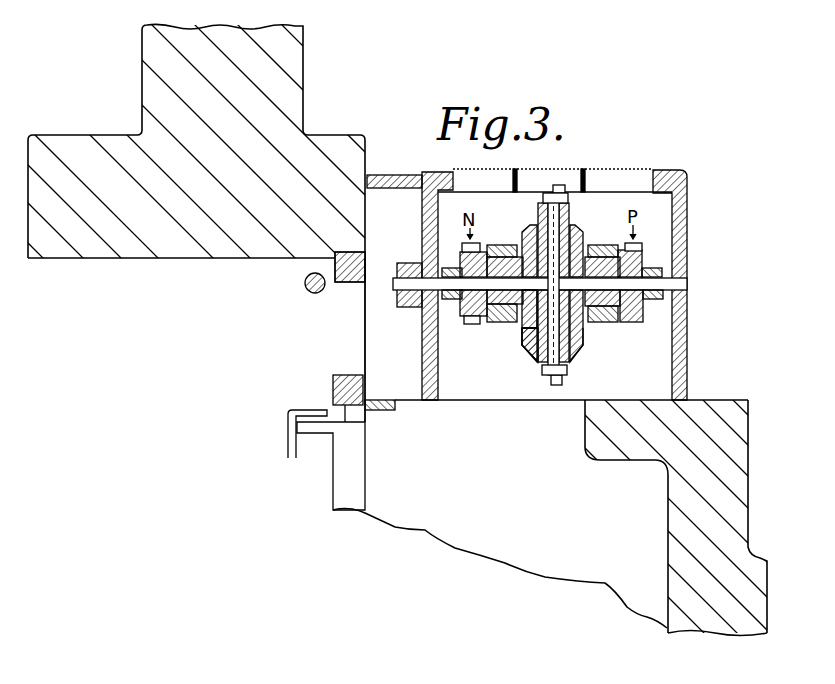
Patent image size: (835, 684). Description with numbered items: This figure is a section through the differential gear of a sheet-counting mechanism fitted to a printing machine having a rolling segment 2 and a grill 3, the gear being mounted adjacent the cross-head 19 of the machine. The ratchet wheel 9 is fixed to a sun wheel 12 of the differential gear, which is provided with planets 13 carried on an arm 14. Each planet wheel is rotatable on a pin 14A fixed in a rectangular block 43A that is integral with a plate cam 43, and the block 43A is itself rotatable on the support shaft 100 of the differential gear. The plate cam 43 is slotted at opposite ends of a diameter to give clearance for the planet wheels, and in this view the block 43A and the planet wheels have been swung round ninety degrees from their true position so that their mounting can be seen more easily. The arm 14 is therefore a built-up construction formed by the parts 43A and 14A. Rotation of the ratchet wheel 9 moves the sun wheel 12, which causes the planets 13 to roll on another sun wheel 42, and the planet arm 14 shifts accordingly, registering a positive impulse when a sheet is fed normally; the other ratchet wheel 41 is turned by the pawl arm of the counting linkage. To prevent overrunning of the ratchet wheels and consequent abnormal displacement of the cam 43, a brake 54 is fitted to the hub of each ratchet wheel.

The cross-head 19 is at (348, 152).
The rolling segment 2 is at (666, 272).
The grill 3 is at (287, 447).
The support shaft 100 is at (688, 284).
The sun wheel 12 is at (566, 250).
The planets 13 is at (566, 200).
The plate cam 43 is at (559, 185).
The rectangular block 43A is at (583, 338).
The brake 54 is at (503, 245).
The ratchet wheel 41 is at (465, 325).
The sun wheel 42 is at (538, 314).
The arm 14 is at (533, 318).
The pin 14A is at (540, 332).
The ratchet wheel 9 is at (630, 322).